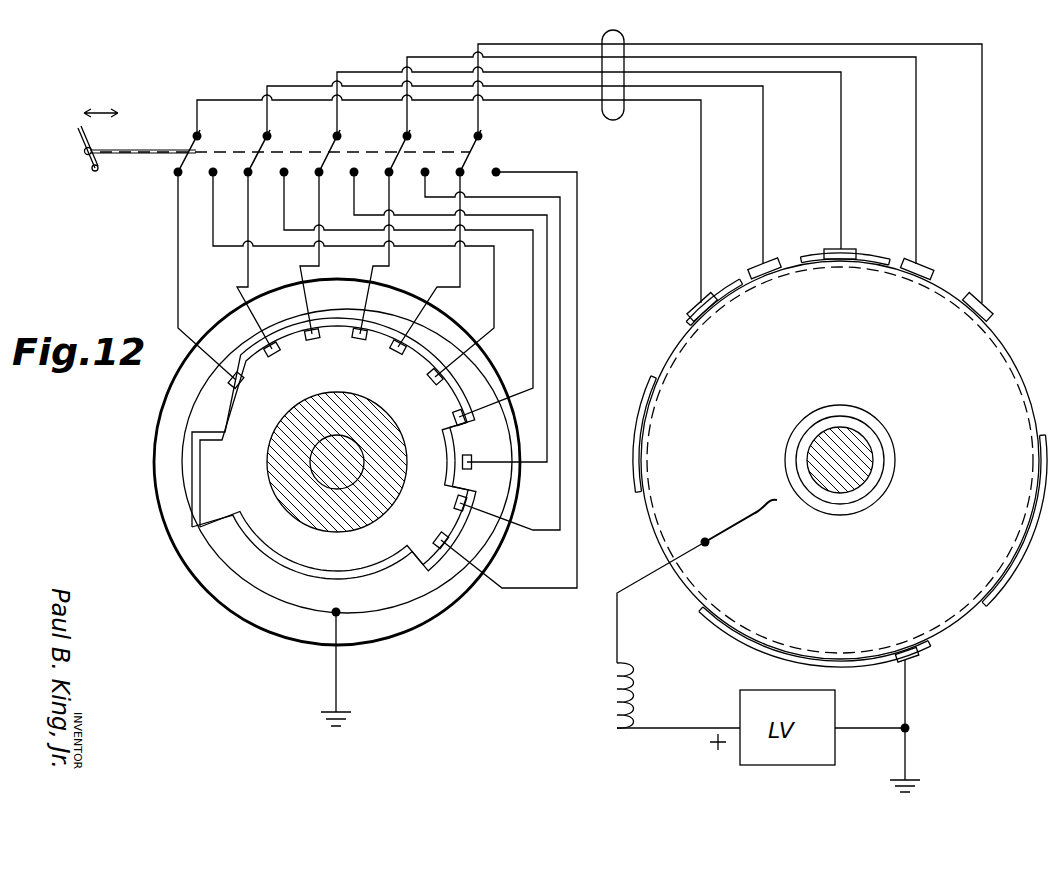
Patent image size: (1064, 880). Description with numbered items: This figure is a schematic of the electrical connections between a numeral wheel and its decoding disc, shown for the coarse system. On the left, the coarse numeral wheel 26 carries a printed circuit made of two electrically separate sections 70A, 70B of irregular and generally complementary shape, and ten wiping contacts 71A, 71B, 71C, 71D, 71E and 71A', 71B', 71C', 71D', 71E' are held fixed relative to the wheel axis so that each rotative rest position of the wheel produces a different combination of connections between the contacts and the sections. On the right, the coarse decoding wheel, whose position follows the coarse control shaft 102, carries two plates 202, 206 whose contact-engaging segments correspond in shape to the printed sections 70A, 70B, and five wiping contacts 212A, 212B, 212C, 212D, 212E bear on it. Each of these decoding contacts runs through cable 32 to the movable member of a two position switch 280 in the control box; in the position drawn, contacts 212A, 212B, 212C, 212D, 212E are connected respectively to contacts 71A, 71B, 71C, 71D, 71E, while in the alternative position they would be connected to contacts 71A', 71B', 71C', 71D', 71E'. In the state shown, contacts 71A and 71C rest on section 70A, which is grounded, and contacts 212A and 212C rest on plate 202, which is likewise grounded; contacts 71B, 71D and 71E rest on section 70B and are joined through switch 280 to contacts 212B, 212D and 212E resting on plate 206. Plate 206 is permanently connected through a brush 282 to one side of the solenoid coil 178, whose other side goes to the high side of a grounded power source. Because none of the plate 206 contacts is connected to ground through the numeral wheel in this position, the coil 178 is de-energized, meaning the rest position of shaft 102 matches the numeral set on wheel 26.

The two position switch 280 is at (163, 104).
The cable 32 is at (609, 120).
The coarse numeral wheel 26 is at (234, 613).
The coarse control shaft 102 is at (845, 432).
The printed circuit section 70A is at (232, 528).
The printed circuit section 70B is at (215, 468).
The wiping contact 71A is at (211, 292).
The wiping contact 71B is at (258, 291).
The wiping contact 71C is at (309, 278).
The wiping contact 71D is at (363, 273).
The wiping contact 71E is at (412, 279).
The wiping contact 71A' is at (353, 286).
The wiping contact 71B' is at (408, 299).
The wiping contact 71C' is at (450, 320).
The wiping contact 71D' is at (485, 351).
The wiping contact 71E' is at (481, 380).
The plate 206 is at (859, 583).
The plate 202 is at (742, 638).
The wiping contact 212A is at (696, 290).
The wiping contact 212B is at (757, 264).
The wiping contact 212C is at (829, 250).
The wiping contact 212D is at (900, 266).
The wiping contact 212E is at (986, 308).
The brush 282 is at (722, 536).
The solenoid coil 178 is at (623, 692).